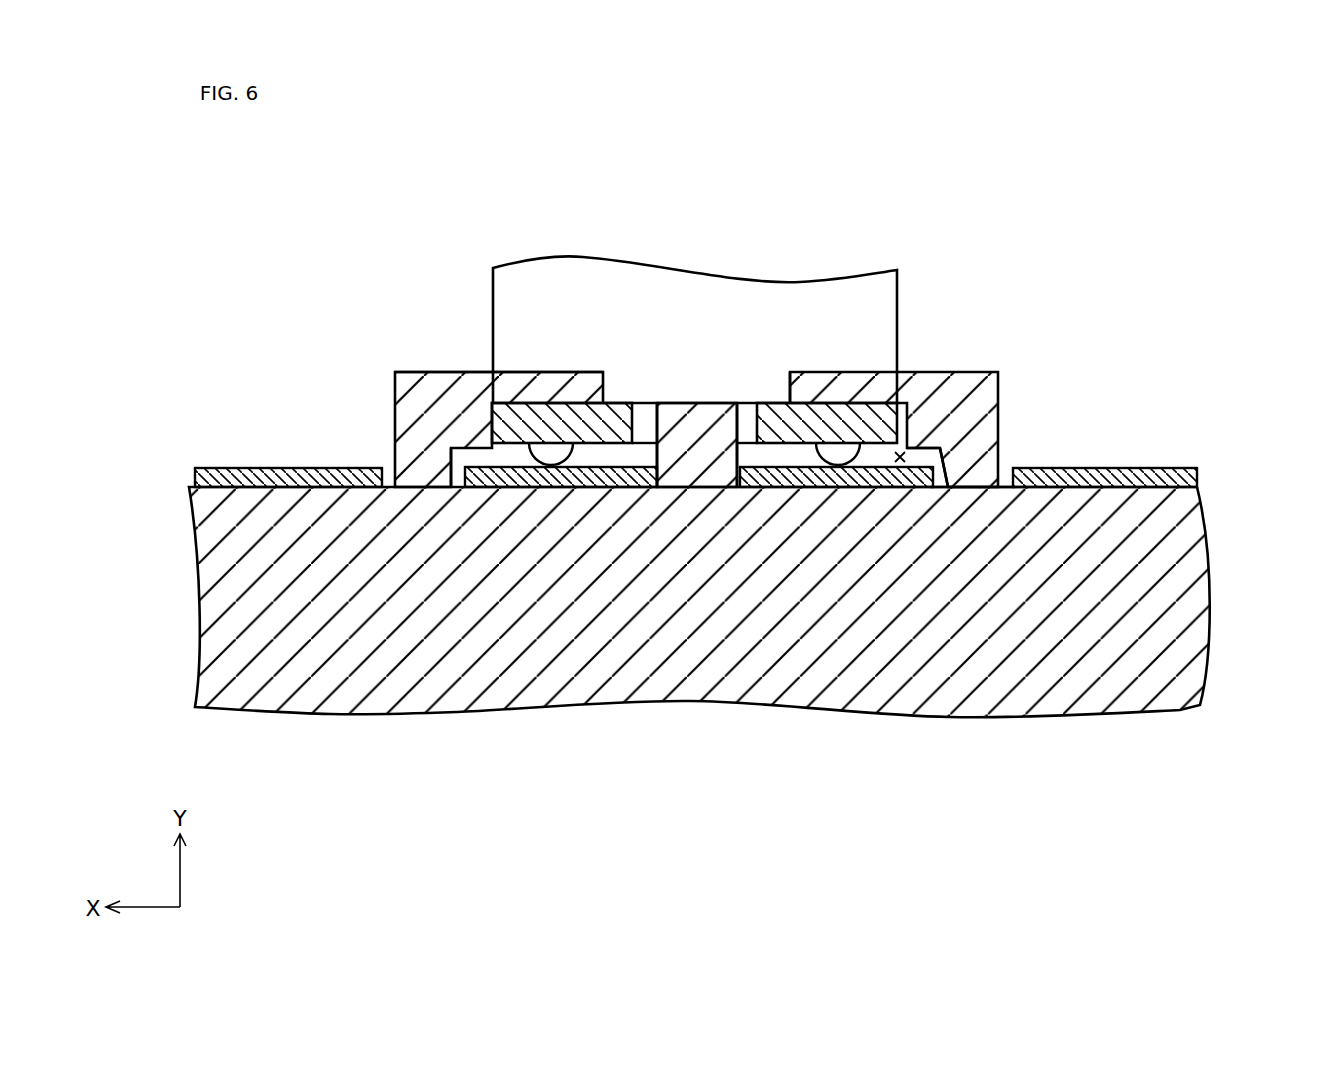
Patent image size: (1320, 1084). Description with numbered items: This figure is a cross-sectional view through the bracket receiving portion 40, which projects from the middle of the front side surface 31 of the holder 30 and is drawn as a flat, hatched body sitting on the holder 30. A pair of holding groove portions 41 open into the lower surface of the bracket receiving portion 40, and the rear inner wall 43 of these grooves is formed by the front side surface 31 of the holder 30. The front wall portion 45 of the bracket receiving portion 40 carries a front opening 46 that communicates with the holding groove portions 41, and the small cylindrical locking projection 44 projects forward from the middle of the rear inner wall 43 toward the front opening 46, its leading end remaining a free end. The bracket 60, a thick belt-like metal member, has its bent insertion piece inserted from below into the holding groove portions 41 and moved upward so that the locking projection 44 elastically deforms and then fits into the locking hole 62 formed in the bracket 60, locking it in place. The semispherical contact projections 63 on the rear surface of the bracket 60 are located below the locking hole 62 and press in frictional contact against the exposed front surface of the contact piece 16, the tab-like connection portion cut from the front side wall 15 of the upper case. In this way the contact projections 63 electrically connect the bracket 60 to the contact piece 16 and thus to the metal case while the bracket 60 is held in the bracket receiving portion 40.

The front side wall 15 is at (1141, 468).
The contact piece 16 is at (946, 447).
The holder 30 is at (1232, 557).
The front side surface 31 is at (1003, 486).
The bracket receiving portion 40 is at (1028, 397).
The holding groove portions 41 is at (903, 452).
The rear inner wall 43 is at (455, 483).
The locking projection 44 is at (683, 403).
The front wall portion 45 is at (477, 372).
The front opening 46 is at (790, 392).
The bracket 60 is at (531, 230).
The locking hole 62 is at (646, 401).
The contact projections 63 is at (583, 456).